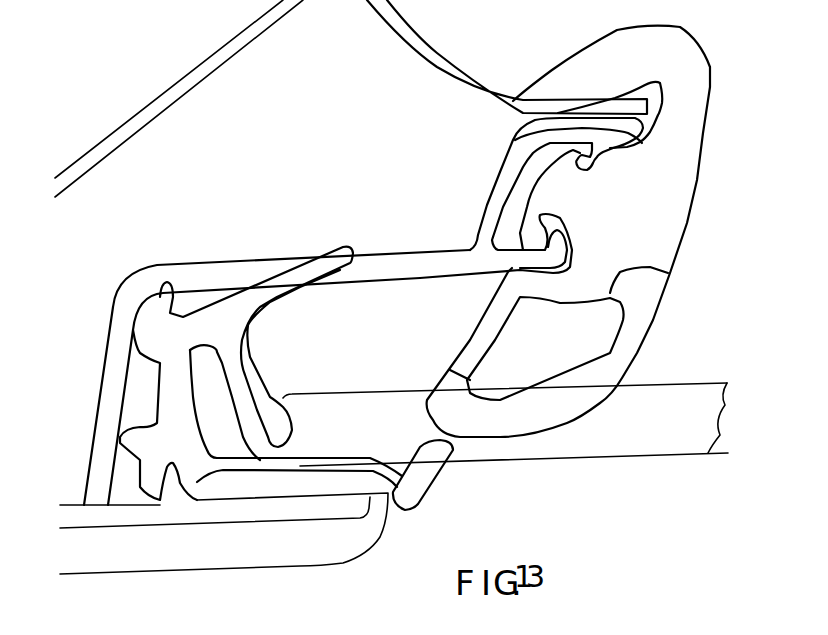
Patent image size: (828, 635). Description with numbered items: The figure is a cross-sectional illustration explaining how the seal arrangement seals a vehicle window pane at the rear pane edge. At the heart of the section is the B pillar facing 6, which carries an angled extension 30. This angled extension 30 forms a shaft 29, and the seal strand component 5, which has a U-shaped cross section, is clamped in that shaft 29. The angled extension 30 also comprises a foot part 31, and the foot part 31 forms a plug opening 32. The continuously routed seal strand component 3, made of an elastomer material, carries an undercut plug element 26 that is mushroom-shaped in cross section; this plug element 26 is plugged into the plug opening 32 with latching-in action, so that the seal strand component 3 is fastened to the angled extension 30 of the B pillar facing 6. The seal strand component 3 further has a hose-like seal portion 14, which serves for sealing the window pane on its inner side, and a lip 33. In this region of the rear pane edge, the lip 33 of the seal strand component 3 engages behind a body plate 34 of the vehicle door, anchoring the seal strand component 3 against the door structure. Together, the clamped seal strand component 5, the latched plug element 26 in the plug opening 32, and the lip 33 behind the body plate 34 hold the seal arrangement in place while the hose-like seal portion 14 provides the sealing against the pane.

The seal strand component 3 is at (672, 277).
The seal strand component 5 is at (172, 338).
The B pillar facing 6 is at (113, 545).
The hose-like seal portion 14 is at (580, 403).
The plug element 26 is at (543, 193).
The shaft 29 is at (135, 398).
The angled extension 30 is at (240, 277).
The foot part 31 is at (505, 157).
The plug opening 32 is at (500, 230).
The lip 33 is at (573, 78).
The body plate 34 is at (205, 80).